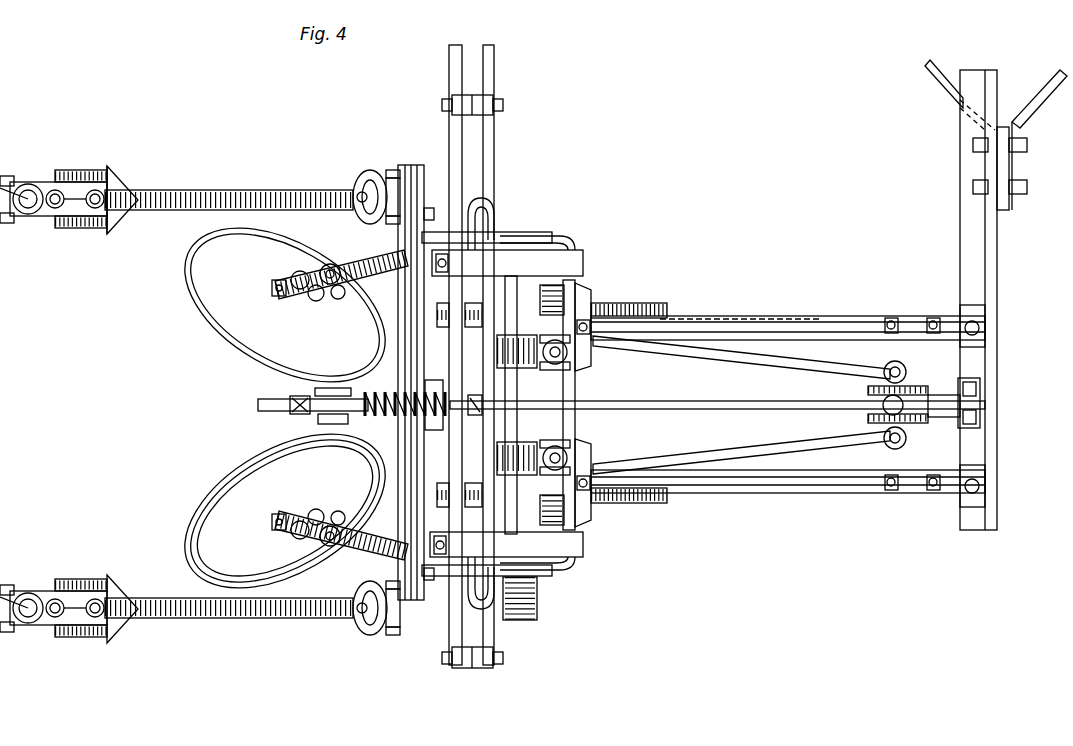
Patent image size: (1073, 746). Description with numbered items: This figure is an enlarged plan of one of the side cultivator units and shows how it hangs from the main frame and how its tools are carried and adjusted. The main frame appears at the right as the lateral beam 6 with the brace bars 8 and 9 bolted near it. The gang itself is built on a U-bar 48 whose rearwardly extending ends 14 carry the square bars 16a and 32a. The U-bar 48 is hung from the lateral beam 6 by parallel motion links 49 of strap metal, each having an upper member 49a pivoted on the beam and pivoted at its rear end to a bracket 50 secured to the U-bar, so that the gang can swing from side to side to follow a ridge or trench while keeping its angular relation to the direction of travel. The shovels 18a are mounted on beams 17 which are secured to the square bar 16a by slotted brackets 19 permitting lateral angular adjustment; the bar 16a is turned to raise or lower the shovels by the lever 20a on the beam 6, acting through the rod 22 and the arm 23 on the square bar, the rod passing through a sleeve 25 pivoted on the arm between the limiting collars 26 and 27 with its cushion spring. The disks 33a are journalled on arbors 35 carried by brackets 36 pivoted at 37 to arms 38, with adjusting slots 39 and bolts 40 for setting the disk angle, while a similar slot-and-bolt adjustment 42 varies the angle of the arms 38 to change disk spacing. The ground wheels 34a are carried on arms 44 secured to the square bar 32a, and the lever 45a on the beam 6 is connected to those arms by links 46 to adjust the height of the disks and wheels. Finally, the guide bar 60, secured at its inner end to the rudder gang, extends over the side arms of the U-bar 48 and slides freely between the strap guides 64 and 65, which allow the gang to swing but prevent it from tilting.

The lateral beam 6 is at (992, 256).
The brace bar 8 is at (1040, 96).
The brace bar 9 is at (938, 84).
The ends of the U-bar 14 is at (436, 430).
The square bar 16a is at (412, 345).
The beam 17 is at (208, 197).
The shovel 18a is at (93, 230).
The bracket 19 is at (371, 170).
The lever 20a is at (945, 427).
The rod 22 is at (645, 410).
The arm 23 is at (316, 419).
The sleeve 25 is at (358, 418).
The limiting collar 26 is at (292, 396).
The limiting collar 27 is at (474, 417).
The square bar 32a is at (538, 607).
The disk 33a is at (212, 316).
The wheel 34a is at (645, 303).
The arbor 35 is at (302, 292).
The bracket 36 is at (318, 302).
The pivot 37 is at (272, 293).
The arm 38 is at (360, 268).
The adjusting slot 39 is at (334, 285).
The bolt 40 is at (340, 300).
The slot-and-bolt adjustment 42 is at (482, 206).
The arm 44 is at (535, 368).
The lever 45a is at (930, 392).
The link 46 is at (765, 358).
The U-bar 48 is at (575, 392).
The parallel motion link 49 is at (756, 318).
The upper member 49a is at (860, 305).
The bracket 50 is at (590, 298).
The guide bar 60 is at (455, 150).
The strap 64 is at (570, 256).
The strap 65 is at (565, 545).